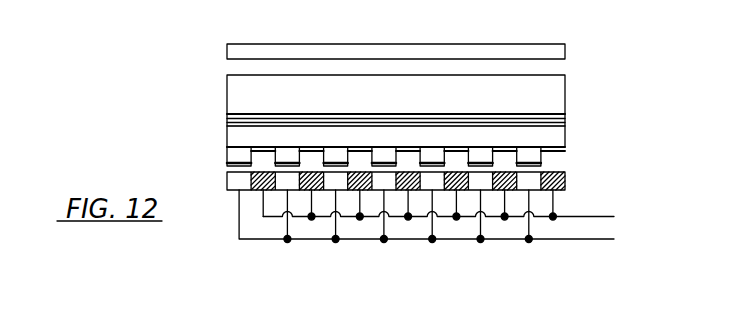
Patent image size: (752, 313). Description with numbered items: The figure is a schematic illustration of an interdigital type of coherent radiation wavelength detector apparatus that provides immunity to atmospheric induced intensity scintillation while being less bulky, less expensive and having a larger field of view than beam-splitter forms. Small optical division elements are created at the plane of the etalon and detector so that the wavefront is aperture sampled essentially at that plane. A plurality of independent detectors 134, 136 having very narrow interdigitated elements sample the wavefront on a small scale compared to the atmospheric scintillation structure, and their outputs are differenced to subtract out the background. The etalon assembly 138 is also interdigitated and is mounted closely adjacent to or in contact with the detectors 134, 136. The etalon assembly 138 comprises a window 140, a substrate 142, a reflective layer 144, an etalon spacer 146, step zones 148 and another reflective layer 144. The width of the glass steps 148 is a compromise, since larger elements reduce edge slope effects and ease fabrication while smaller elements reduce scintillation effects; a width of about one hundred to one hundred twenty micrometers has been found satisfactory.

The detector 134 is at (582, 216).
The detector 136 is at (579, 239).
The etalon assembly 138 is at (208, 108).
The window 140 is at (565, 53).
The substrate 142 is at (565, 86).
The reflective layer 144 is at (565, 118).
The etalon spacer 146 is at (565, 140).
The step zones 148 is at (538, 161).